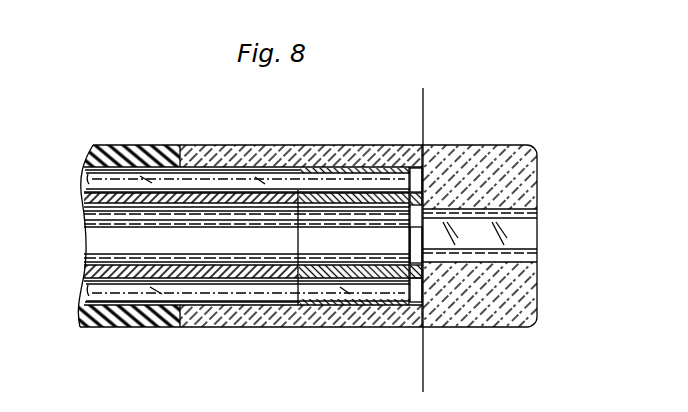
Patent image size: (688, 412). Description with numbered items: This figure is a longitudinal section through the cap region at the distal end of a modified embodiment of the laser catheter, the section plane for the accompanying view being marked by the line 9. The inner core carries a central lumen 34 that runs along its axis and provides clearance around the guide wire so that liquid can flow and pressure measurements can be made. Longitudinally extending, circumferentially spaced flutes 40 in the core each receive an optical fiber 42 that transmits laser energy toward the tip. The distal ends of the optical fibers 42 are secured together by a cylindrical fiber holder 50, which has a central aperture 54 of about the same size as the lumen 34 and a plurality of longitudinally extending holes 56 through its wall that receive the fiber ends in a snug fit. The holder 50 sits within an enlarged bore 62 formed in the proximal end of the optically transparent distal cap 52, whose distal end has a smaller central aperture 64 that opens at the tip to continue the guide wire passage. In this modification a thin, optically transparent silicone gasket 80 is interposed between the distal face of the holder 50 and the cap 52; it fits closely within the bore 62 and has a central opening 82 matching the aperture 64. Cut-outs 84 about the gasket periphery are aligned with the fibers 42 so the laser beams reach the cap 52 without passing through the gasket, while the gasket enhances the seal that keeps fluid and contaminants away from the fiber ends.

The lumen 34 is at (238, 252).
The flutes 40 is at (123, 193).
The optical fiber 42 is at (250, 181).
The fiber holder 50 is at (362, 160).
The distal cap 52 is at (514, 146).
The central aperture 54 is at (308, 258).
The longitudinally extending holes 56 is at (357, 290).
The enlarged bore 62 is at (202, 178).
The central aperture 64 is at (523, 234).
The gasket 80 is at (422, 199).
The central opening 82 is at (418, 258).
The cut-outs 84 is at (418, 302).
The section line 9- 9 is at (423, 100).